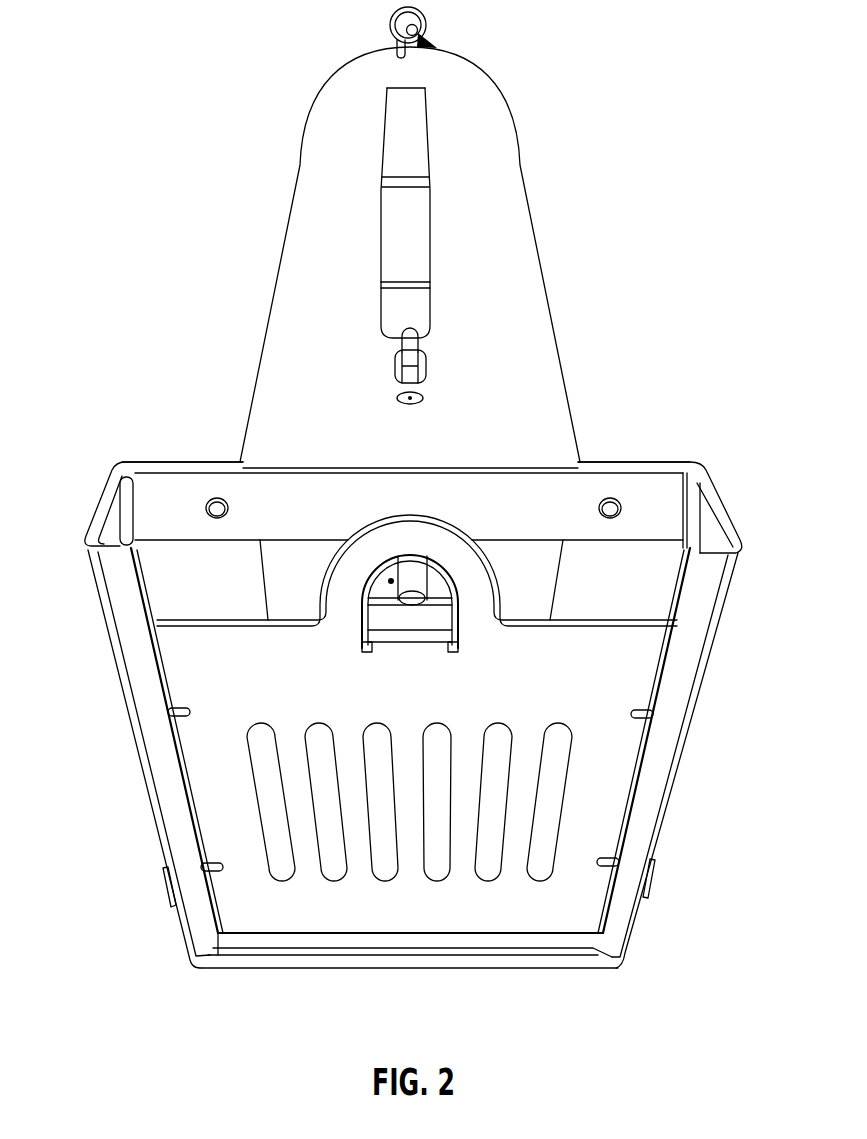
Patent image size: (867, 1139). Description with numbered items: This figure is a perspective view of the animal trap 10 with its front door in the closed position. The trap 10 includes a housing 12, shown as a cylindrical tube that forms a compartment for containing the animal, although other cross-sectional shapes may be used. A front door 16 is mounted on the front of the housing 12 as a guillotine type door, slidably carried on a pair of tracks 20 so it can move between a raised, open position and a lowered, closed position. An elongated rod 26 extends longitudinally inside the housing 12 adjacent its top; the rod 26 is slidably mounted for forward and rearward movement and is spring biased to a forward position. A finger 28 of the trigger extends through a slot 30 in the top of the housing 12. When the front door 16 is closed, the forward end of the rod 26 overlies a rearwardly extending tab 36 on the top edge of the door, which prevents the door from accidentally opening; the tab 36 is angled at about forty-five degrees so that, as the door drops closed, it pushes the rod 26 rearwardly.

The trap 10 is at (205, 308).
The housing 12 is at (292, 207).
The front door 16 is at (573, 883).
The tracks 20 is at (102, 508).
The elongated rod 26 is at (413, 567).
The finger 28 is at (411, 352).
The slot 30 is at (427, 367).
The tab 36 is at (405, 625).